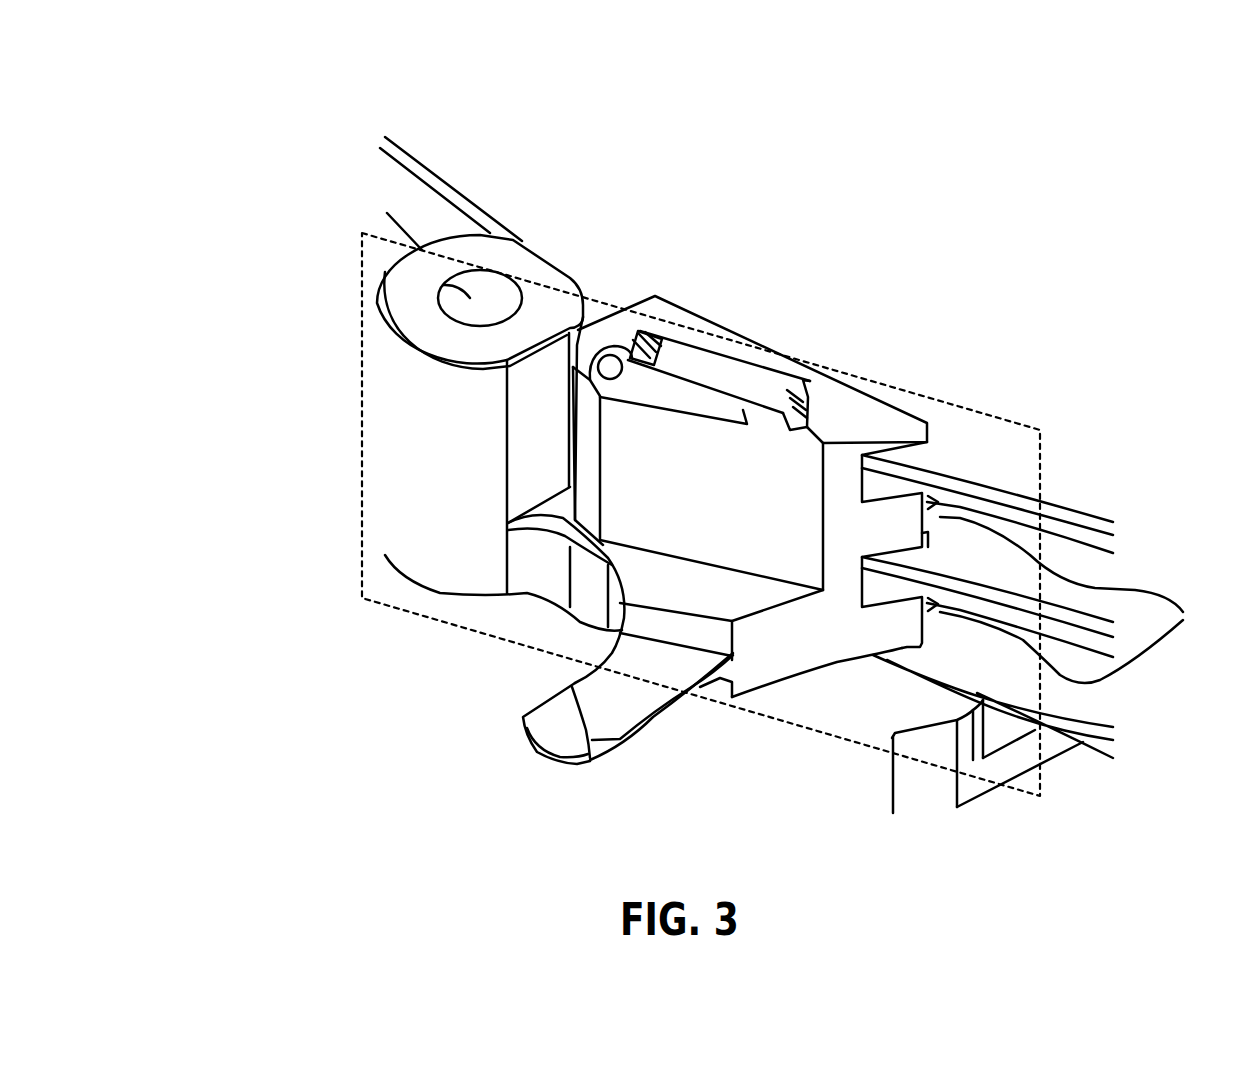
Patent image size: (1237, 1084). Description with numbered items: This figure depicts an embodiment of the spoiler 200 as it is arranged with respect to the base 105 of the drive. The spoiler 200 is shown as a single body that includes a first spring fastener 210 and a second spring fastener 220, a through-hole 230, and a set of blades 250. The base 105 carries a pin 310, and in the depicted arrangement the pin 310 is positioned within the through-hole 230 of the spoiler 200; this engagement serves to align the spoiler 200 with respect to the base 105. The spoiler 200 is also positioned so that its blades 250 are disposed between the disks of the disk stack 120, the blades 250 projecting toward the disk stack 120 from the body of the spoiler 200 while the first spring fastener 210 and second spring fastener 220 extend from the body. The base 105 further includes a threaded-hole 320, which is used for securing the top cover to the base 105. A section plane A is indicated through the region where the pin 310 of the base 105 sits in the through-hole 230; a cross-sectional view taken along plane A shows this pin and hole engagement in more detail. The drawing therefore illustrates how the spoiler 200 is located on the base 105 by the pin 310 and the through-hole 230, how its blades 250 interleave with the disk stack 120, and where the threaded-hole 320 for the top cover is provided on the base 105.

The base 105 is at (892, 738).
The disk stack 120 is at (443, 132).
The spoiler 200 is at (715, 322).
The first spring fastener 210 is at (617, 740).
The second spring fastener 220 is at (753, 374).
The through-hole 230 is at (650, 302).
The blades 250 is at (1080, 600).
The pin 310 is at (614, 363).
The threaded-hole 320 is at (438, 279).
The plane A is at (963, 758).